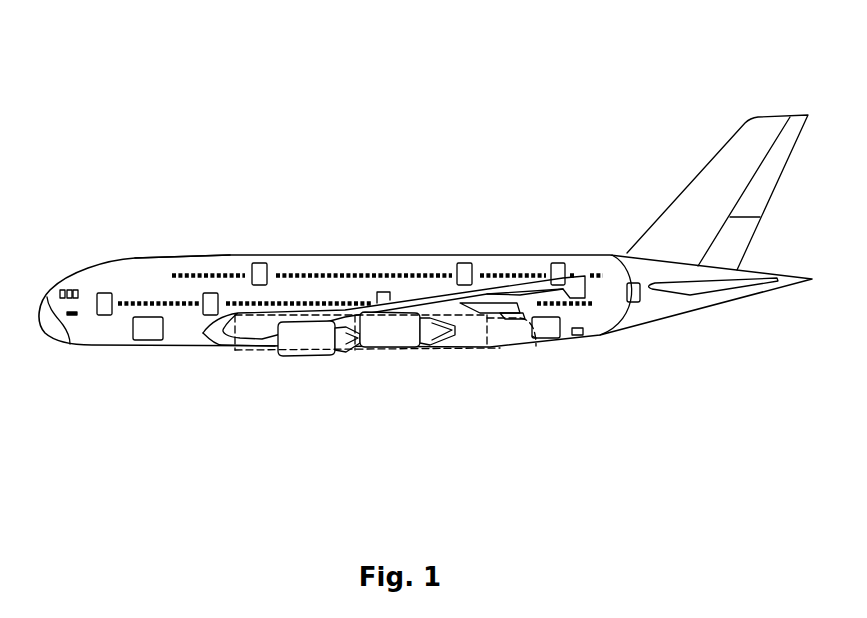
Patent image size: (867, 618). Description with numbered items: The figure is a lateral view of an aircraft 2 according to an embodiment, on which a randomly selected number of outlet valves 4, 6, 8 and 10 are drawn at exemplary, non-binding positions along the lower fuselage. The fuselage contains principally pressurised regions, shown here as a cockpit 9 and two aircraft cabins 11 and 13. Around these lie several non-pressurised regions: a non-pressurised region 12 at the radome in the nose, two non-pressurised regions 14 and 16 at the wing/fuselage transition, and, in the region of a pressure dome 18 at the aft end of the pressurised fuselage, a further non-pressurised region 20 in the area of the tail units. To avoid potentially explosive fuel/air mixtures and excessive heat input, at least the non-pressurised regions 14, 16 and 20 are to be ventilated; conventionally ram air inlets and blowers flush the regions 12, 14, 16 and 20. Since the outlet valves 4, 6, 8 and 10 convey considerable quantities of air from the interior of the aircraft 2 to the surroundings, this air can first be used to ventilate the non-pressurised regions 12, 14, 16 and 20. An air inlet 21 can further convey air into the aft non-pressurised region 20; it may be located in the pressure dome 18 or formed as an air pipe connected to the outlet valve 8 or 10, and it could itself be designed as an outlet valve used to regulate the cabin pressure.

The aircraft 2 is at (397, 120).
The outlet valve 4 is at (223, 350).
The outlet valve 6 is at (245, 358).
The outlet valve 8 is at (532, 351).
The pressurised fuselage region 9 is at (107, 278).
The outlet valve 10 is at (545, 351).
The pressurised fuselage region 11 is at (288, 303).
The non-pressurised region 12 is at (53, 330).
The pressurised fuselage region 13 is at (390, 275).
The non-pressurised region 14 is at (327, 373).
The non-pressurised region 16 is at (449, 358).
The pressure dome 18 is at (630, 283).
The non-pressurised region 20 is at (663, 310).
The air inlet 21 is at (636, 302).